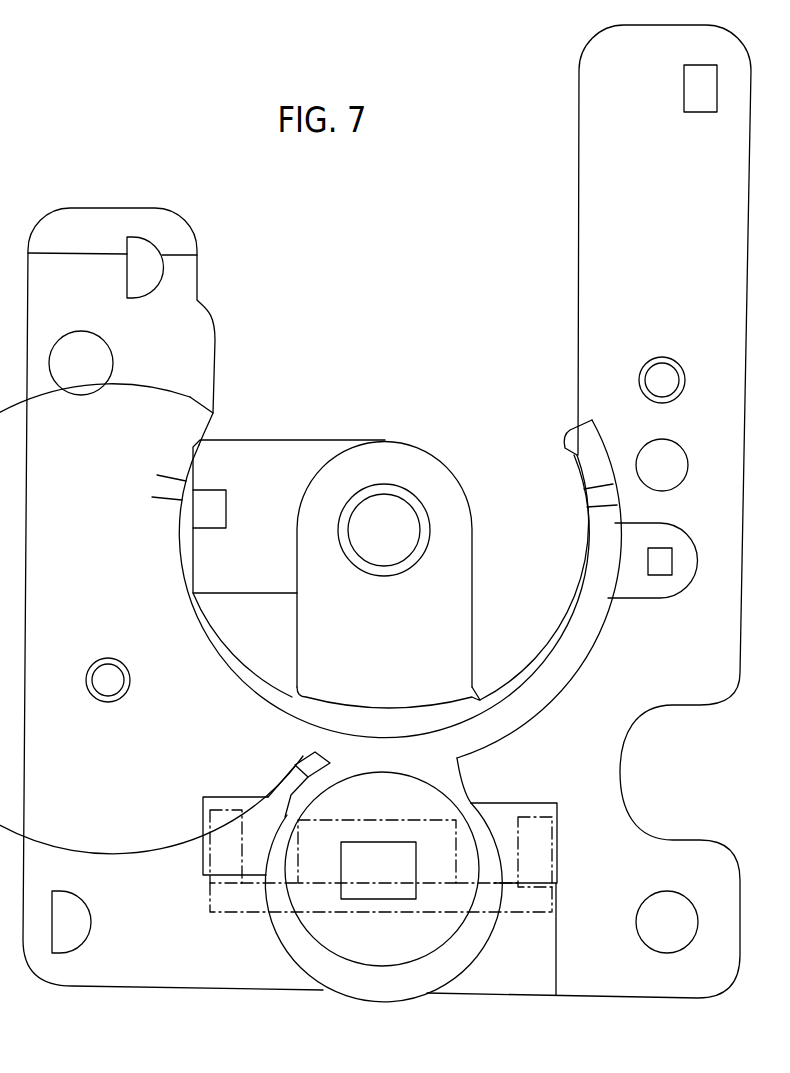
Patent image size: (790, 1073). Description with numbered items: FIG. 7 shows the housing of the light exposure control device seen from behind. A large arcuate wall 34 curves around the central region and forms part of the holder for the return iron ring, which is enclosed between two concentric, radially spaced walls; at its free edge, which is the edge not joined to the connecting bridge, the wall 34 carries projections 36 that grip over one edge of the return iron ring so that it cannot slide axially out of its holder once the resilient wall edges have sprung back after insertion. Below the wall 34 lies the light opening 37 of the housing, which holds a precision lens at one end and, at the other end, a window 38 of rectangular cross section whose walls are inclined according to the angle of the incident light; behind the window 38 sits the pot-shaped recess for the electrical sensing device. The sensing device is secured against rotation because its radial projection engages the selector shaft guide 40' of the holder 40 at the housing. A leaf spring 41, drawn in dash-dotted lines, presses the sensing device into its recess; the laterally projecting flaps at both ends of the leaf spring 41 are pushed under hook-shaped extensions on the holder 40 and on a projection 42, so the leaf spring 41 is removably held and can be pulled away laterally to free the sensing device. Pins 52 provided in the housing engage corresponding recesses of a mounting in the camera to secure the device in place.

The wall 34 is at (562, 672).
The projections 36 is at (213, 413).
The light opening 37 is at (407, 897).
The window 38 is at (355, 897).
The holder 40 is at (252, 774).
The selector shaft guide 40' is at (341, 782).
The leaf spring 41 is at (227, 912).
The projection 42 is at (535, 867).
The pins 52 is at (653, 381).